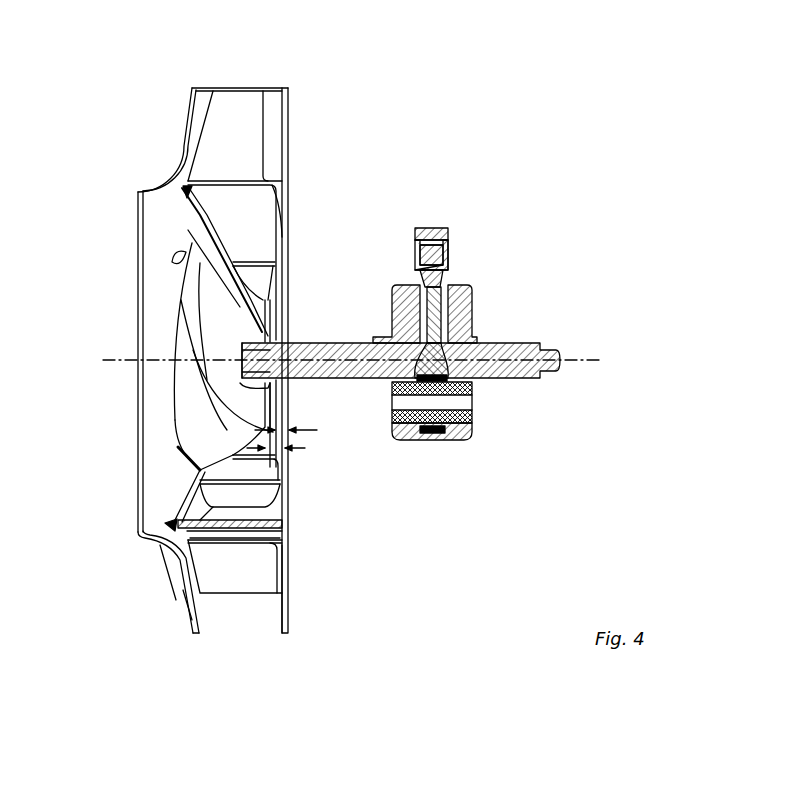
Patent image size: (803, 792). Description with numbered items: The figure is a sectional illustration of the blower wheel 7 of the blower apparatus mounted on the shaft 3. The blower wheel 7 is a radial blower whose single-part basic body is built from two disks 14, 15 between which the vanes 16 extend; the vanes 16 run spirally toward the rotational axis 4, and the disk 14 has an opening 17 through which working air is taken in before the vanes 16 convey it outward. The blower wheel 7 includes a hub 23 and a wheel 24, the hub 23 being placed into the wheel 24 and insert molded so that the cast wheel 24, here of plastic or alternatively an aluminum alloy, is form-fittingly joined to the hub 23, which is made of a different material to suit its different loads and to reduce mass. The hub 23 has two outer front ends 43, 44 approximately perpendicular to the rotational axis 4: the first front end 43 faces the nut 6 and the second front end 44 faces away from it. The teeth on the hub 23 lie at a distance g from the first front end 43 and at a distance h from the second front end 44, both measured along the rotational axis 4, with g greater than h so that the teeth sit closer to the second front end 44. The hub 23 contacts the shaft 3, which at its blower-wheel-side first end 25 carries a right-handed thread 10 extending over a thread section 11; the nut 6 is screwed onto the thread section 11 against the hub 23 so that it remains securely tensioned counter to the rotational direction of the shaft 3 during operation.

The shaft 3 is at (373, 340).
The rotational axis 4 is at (112, 358).
The nut 6 is at (260, 382).
The blower wheel 7 is at (183, 129).
The thread 10 is at (265, 375).
The thread section 11 is at (236, 378).
The disk 14 is at (185, 600).
The disk 15 is at (288, 575).
The vanes 16 is at (248, 593).
The opening 17 is at (137, 517).
The hub 23 is at (272, 318).
The wheel 24 is at (288, 120).
The first end 25 is at (243, 343).
The first front end 43 is at (270, 338).
The second front end 44 is at (277, 343).
The distance h is at (293, 422).
The distance g is at (280, 458).